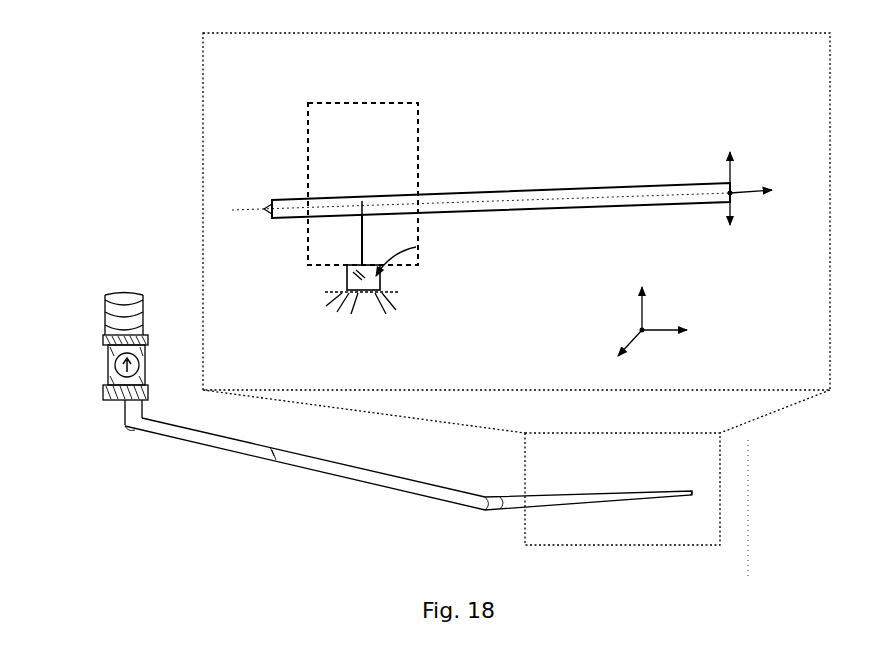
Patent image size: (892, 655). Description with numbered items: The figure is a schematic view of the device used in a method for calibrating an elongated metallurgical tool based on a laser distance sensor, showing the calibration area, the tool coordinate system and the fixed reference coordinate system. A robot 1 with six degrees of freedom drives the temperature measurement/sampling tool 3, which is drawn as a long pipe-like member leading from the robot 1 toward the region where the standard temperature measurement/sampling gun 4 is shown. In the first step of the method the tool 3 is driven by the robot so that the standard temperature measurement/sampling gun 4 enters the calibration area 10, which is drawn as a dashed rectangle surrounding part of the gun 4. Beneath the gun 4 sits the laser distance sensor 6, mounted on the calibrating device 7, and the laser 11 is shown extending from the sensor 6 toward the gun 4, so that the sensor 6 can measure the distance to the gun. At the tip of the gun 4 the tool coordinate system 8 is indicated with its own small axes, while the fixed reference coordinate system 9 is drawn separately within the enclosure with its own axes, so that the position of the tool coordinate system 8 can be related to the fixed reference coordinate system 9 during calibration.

The robot 1 is at (102, 333).
The temperature measurement/sampling tool 3 is at (202, 446).
The standard temperature measurement/sampling gun 4 is at (348, 196).
The laser distance sensor 6 is at (379, 292).
The calibrating device 7 is at (353, 296).
The tool coordinate system 8 is at (732, 197).
The fixed reference coordinate system 9 is at (646, 326).
The calibration area 10 is at (421, 172).
The laser 11 is at (371, 262).